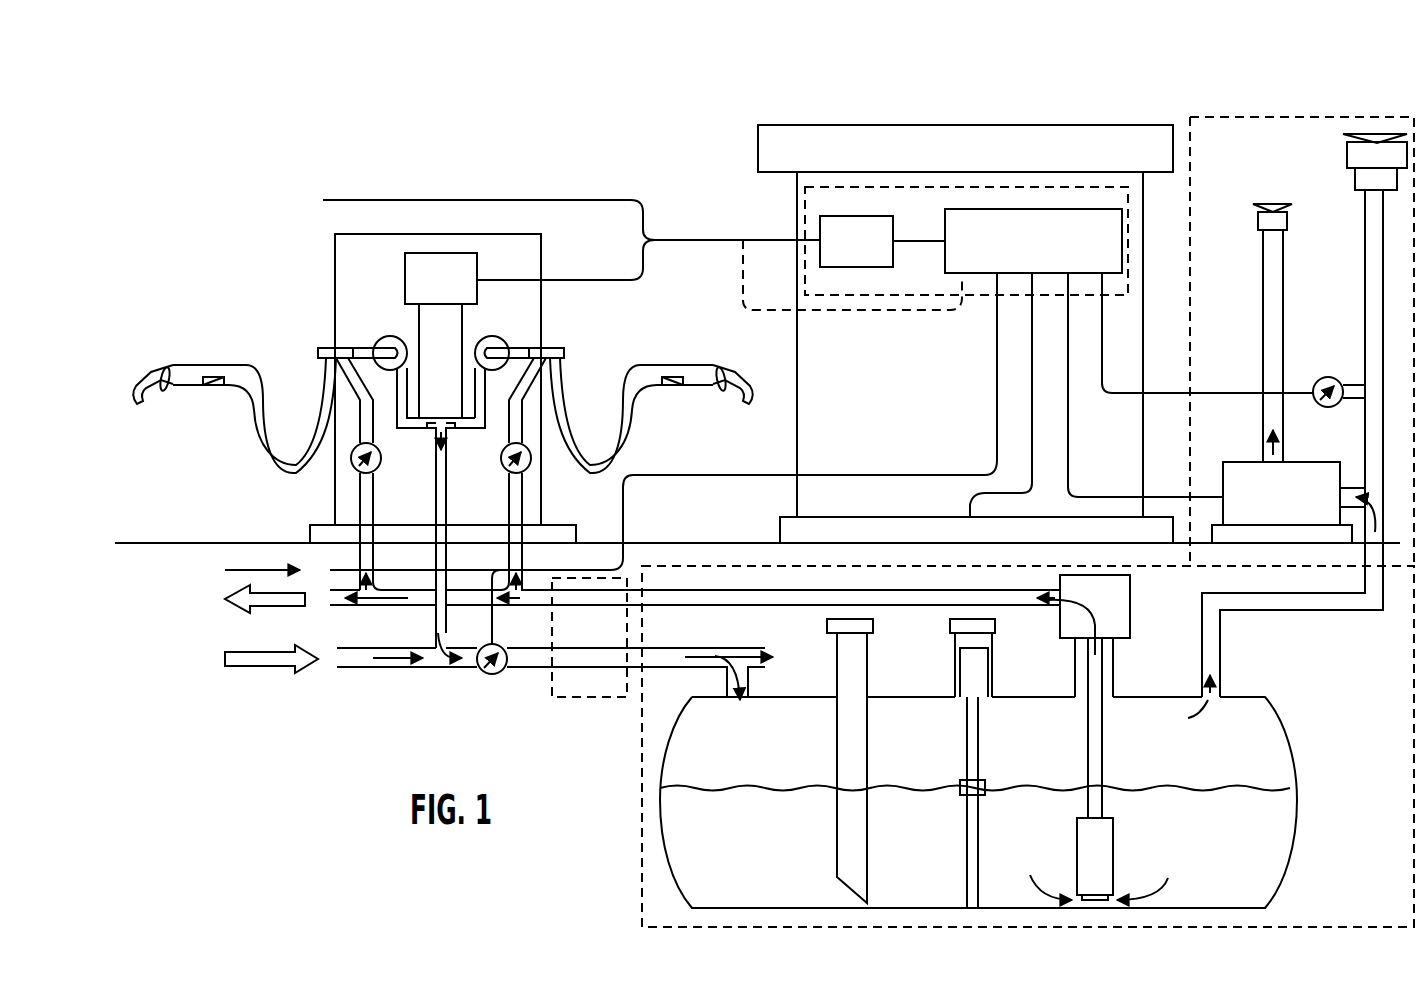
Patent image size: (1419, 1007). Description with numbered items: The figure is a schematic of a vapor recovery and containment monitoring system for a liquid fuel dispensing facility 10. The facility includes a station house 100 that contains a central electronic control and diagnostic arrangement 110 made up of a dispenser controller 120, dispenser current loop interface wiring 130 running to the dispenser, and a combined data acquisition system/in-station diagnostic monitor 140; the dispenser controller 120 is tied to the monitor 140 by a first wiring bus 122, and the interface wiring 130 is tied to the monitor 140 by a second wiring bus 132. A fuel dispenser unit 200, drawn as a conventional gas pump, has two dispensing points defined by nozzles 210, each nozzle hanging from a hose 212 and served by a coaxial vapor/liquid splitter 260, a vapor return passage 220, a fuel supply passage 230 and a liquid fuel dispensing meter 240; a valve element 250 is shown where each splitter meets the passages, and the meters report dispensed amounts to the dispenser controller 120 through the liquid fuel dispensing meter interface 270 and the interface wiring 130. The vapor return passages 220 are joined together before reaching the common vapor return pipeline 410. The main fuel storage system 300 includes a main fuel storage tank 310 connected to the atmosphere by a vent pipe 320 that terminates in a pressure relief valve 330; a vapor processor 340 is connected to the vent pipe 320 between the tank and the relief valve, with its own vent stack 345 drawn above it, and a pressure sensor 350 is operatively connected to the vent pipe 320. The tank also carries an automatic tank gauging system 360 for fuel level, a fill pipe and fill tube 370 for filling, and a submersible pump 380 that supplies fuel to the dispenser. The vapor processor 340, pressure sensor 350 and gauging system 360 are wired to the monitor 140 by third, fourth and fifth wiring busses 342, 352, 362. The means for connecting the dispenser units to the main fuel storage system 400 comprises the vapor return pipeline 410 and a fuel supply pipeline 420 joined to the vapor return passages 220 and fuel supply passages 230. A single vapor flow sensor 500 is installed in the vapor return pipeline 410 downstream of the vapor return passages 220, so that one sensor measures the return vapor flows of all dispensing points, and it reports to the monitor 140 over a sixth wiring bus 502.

The liquid fuel dispensing facility 10 is at (1060, 100).
The station house 100 is at (985, 158).
The central electronic control and diagnostic arrangement 110 is at (935, 222).
The dispenser controller 120 is at (875, 257).
The first wiring bus 122 is at (927, 244).
The dispenser current loop interface wiring 130 is at (433, 198).
The second wiring bus 132 is at (827, 312).
The combined data acquisition system/in-station diagnostic monitor 140 is at (1051, 257).
The fuel dispenser unit 200 is at (383, 263).
The nozzle 210 is at (176, 370).
The hose 212 is at (258, 444).
The vapor return passage 220 is at (479, 410).
The fuel supply passage 230 is at (356, 392).
The liquid fuel dispensing meter 240 is at (361, 472).
The valve 250 is at (393, 336).
The coaxial vapor/liquid splitter 260 is at (318, 354).
The liquid fuel dispensing meter interface 270 is at (459, 290).
The main fuel storage system 300 is at (821, 665).
The main fuel storage tank 310 is at (1051, 750).
The vent pipe 320 is at (1370, 330).
The pressure relief valve 330 is at (1352, 153).
The vapor processor 340 is at (1300, 505).
The third wiring bus 342 is at (1069, 432).
The vent 345 is at (1270, 340).
The pressure sensor 350 is at (1340, 405).
The fourth wiring bus 352 is at (1104, 336).
The automatic tank gauging system 360 is at (970, 730).
The fifth wiring bus 362 is at (1031, 402).
The fill pipe and fill tube 370 is at (852, 660).
The submersible pump 380 is at (1105, 853).
The means for connecting the dispenser units to the main fuel storage system 400 is at (608, 645).
The vapor return pipeline 410 is at (438, 662).
The fuel supply pipeline 420 is at (395, 599).
The vapor flow sensor (AFS) 500 is at (488, 676).
The sixth wiring bus 502 is at (995, 364).